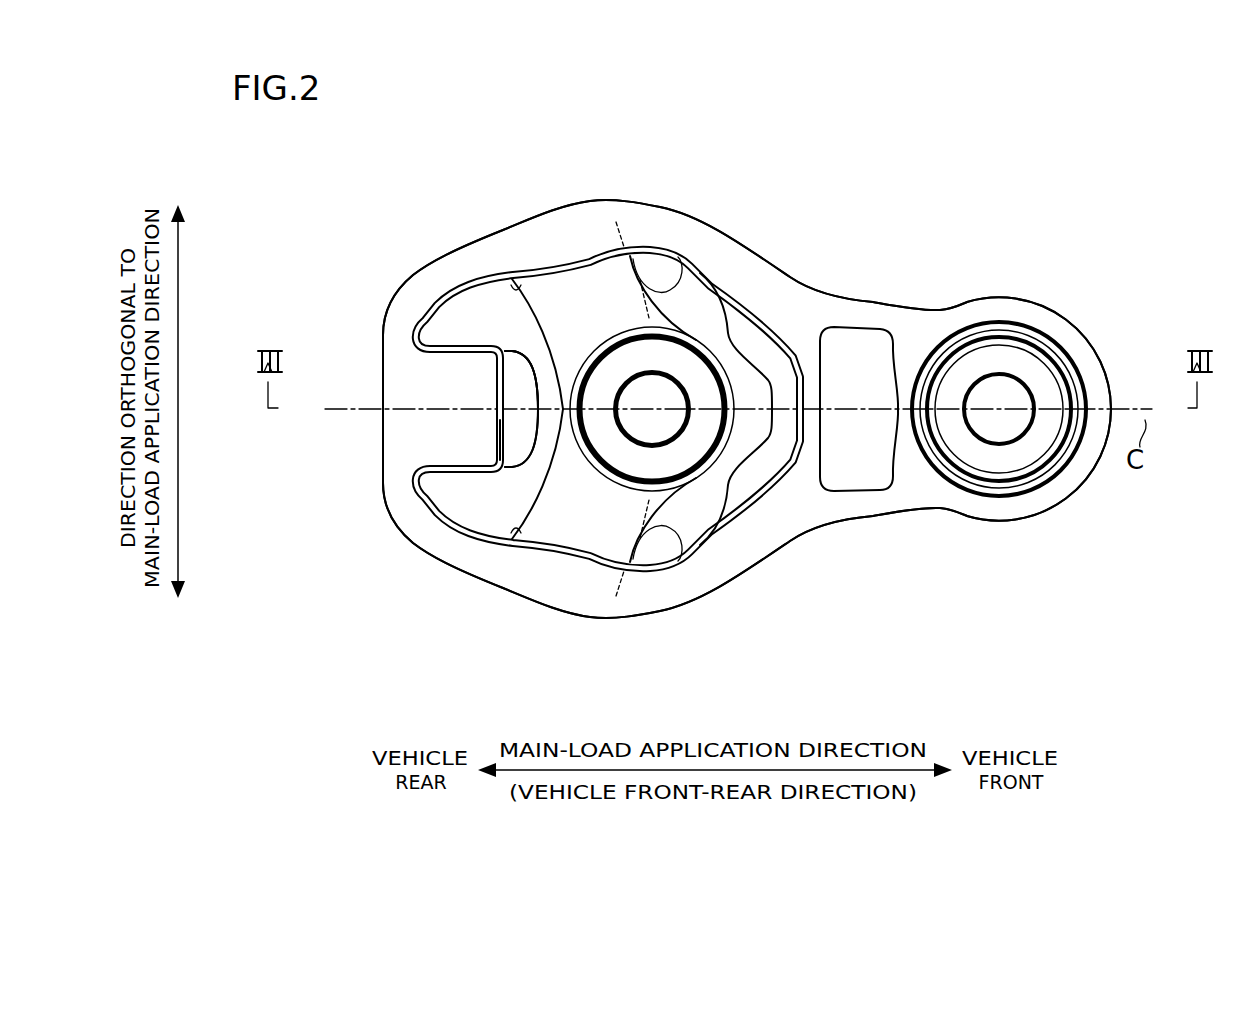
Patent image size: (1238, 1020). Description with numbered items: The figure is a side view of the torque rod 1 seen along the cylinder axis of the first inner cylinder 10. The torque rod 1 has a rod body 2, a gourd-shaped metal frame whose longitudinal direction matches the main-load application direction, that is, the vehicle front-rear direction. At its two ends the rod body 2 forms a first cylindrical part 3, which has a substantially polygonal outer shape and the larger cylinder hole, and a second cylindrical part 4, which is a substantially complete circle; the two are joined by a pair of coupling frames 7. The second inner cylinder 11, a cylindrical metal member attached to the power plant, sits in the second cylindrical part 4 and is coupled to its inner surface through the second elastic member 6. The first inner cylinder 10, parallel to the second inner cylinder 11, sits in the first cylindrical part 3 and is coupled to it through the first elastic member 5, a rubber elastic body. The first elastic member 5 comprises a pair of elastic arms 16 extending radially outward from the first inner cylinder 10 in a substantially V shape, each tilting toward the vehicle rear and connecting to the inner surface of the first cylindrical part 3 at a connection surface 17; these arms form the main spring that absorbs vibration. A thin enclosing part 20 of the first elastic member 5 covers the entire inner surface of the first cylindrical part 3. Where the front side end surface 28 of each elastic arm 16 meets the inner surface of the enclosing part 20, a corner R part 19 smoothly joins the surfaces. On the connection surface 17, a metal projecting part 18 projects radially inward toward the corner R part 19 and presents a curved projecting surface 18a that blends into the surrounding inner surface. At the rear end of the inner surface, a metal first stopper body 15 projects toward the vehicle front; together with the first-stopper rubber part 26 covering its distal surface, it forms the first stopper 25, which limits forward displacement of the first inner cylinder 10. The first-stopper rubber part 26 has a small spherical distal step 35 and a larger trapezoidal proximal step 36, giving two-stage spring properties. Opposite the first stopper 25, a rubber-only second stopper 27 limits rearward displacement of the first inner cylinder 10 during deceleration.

The torque rod 1 is at (1096, 152).
The rod body 2 is at (870, 300).
The first cylindrical part 3 is at (446, 563).
The second cylindrical part 4 is at (1081, 493).
The first elastic member 5 is at (683, 496).
The second elastic member 6 is at (1001, 498).
The coupling frame 7 is at (868, 488).
The first inner cylinder 10 is at (632, 338).
The second inner cylinder 11 is at (1000, 332).
The first stopper body 15 is at (413, 430).
The elastic arm 16 is at (602, 290).
The connection surface 17 is at (512, 287).
The projecting part 18 is at (563, 267).
The projecting surface 18a is at (570, 275).
The corner R part 19 is at (629, 254).
The enclosing part 20 is at (457, 524).
The first stopper 25 is at (263, 417).
The first-stopper rubber part 26 is at (521, 409).
The second stopper 27 is at (765, 460).
The side end surface 28 is at (678, 265).
The distal step 35 is at (537, 416).
The proximal step 36 is at (517, 440).